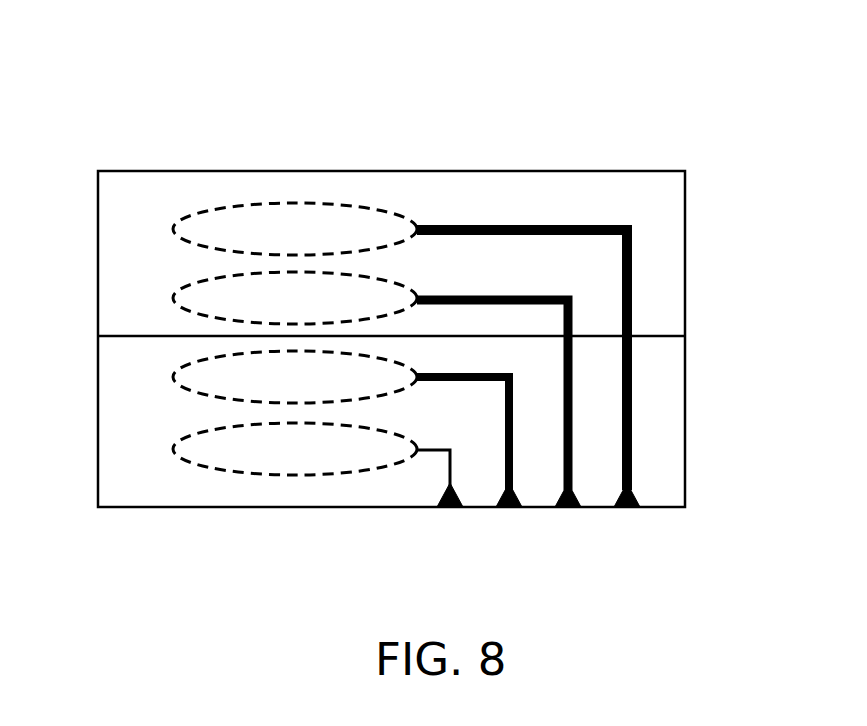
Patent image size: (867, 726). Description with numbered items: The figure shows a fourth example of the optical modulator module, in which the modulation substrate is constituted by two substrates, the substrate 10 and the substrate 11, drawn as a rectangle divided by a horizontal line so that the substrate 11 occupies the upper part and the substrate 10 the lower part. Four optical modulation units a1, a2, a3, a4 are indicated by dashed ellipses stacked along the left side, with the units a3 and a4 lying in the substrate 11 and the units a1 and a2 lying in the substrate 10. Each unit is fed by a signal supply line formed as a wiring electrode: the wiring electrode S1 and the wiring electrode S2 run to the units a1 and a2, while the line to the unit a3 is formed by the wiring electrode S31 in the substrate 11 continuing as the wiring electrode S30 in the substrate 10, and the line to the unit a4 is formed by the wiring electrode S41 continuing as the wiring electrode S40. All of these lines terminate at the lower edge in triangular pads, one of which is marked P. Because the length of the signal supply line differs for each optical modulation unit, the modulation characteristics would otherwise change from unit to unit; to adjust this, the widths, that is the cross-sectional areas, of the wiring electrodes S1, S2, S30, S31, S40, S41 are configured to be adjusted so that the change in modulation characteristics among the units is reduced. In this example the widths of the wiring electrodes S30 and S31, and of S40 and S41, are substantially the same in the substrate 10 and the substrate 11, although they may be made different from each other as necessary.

The substrate 10 is at (692, 364).
The substrate 11 is at (590, 163).
The optical modulation unit a1 is at (173, 449).
The optical modulation unit a2 is at (173, 377).
The optical modulation unit a3 is at (173, 298).
The optical modulation unit a4 is at (173, 229).
The wiring electrode S1 is at (448, 470).
The wiring electrode S2 is at (511, 470).
The wiring electrode S30 is at (570, 470).
The wiring electrode S31 is at (478, 295).
The wiring electrode S40 is at (632, 431).
The wiring electrode S41 is at (632, 255).
The terminal pad P is at (623, 510).